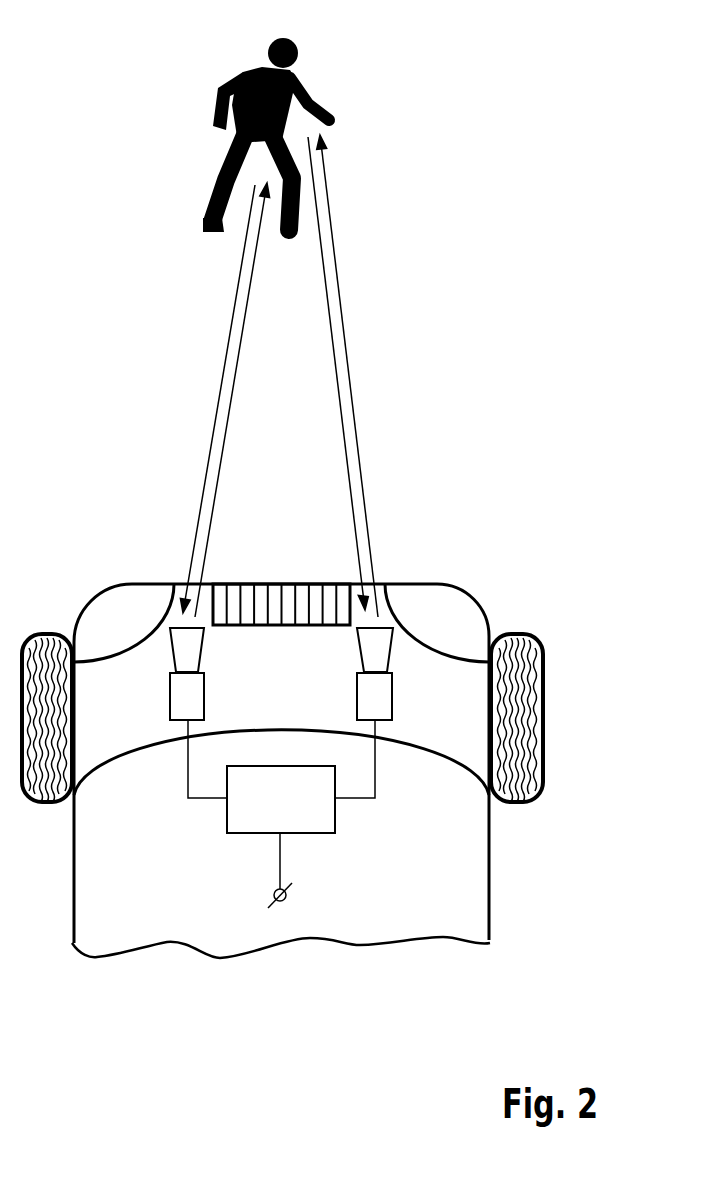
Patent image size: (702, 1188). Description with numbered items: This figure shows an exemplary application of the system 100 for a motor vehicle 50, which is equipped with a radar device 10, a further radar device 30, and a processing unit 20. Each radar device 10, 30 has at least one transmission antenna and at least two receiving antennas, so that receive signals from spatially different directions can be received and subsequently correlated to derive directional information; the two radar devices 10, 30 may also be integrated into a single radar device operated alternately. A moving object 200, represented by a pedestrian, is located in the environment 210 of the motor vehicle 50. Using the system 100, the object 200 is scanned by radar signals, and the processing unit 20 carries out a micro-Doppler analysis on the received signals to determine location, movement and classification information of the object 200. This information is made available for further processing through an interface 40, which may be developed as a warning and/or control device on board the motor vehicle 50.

The radar device 10 is at (170, 700).
The processing unit 20 is at (335, 815).
The further radar device 30 is at (392, 694).
The interface 40 is at (288, 897).
The motor vehicle 50 is at (410, 584).
The system 100 is at (162, 916).
The object 200 is at (215, 105).
The environment 210 is at (404, 358).